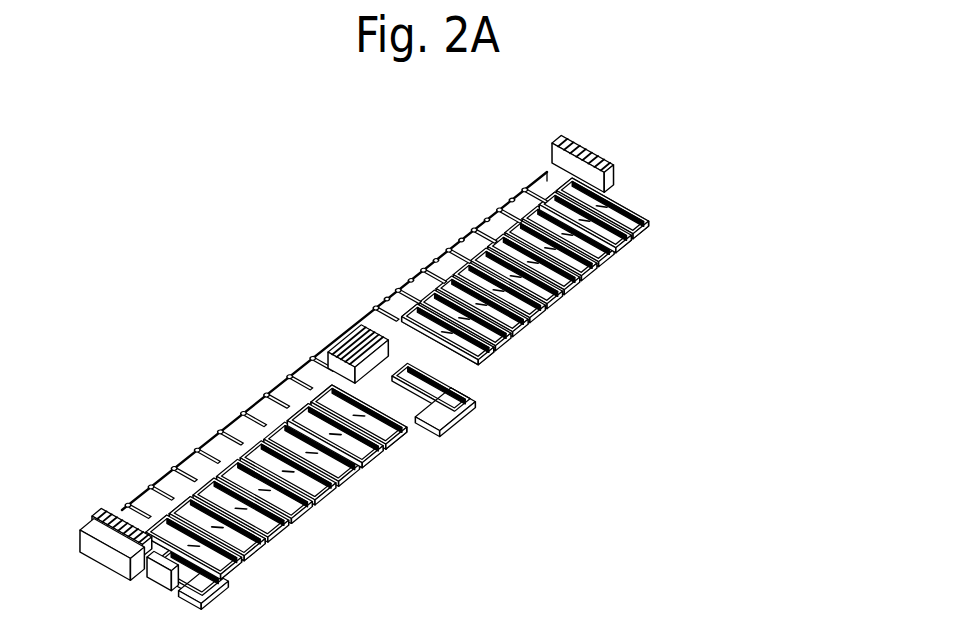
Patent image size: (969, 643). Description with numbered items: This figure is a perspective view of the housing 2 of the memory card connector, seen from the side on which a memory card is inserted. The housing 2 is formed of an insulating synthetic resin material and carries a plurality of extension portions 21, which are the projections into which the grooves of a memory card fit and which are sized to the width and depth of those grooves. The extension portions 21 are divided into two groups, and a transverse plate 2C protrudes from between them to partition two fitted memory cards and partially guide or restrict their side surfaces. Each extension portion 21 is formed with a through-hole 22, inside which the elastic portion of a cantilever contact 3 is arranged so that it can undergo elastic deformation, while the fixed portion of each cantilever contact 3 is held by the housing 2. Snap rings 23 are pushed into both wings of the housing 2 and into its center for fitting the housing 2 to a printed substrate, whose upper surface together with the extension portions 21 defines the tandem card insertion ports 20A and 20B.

The housing 2 is at (367, 320).
The transverse plate 2C is at (464, 411).
The cantilever contact 3 is at (523, 183).
The card insertion port 20A is at (547, 304).
The card insertion port 20B is at (329, 491).
The extension portion 21 is at (648, 225).
The through-hole 22 is at (632, 240).
The snap ring 23 is at (563, 139).